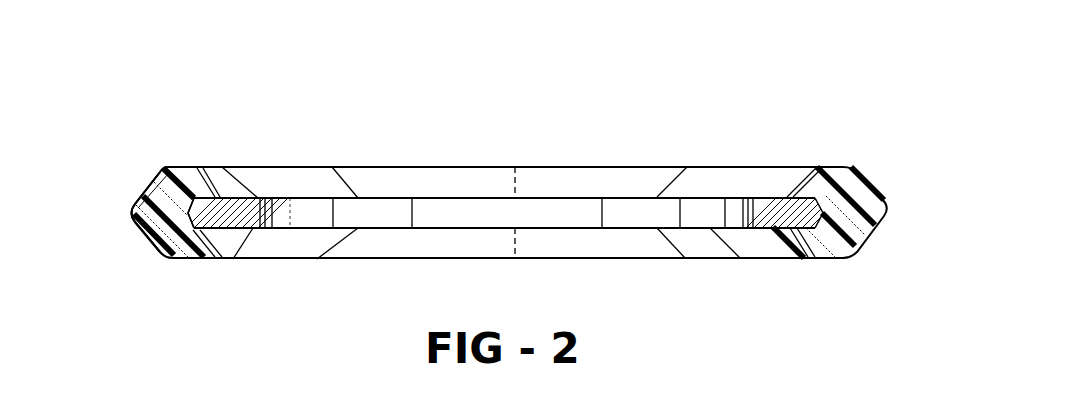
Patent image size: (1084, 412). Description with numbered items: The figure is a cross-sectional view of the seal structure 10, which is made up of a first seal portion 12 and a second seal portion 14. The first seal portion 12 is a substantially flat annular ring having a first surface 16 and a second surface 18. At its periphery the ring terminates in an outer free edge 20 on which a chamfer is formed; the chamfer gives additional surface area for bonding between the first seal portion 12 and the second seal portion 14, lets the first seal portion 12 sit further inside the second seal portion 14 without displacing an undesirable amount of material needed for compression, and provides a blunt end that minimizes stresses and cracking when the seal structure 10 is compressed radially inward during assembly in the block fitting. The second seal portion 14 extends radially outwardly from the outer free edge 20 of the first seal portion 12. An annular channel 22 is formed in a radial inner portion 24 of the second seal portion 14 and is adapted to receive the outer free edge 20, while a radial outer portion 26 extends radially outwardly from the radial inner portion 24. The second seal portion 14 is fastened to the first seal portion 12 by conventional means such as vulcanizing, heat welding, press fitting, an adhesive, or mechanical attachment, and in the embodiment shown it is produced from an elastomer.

The seal structure 10 is at (779, 111).
The first seal portion 12 is at (266, 213).
The second seal portion 14 is at (177, 164).
The first surface 16 is at (775, 197).
The second surface 18 is at (776, 229).
The outer free edge 20 is at (870, 180).
The annular channel 22 is at (197, 214).
The radial inner portion 24 is at (178, 260).
The radial outer portion 26 is at (127, 213).